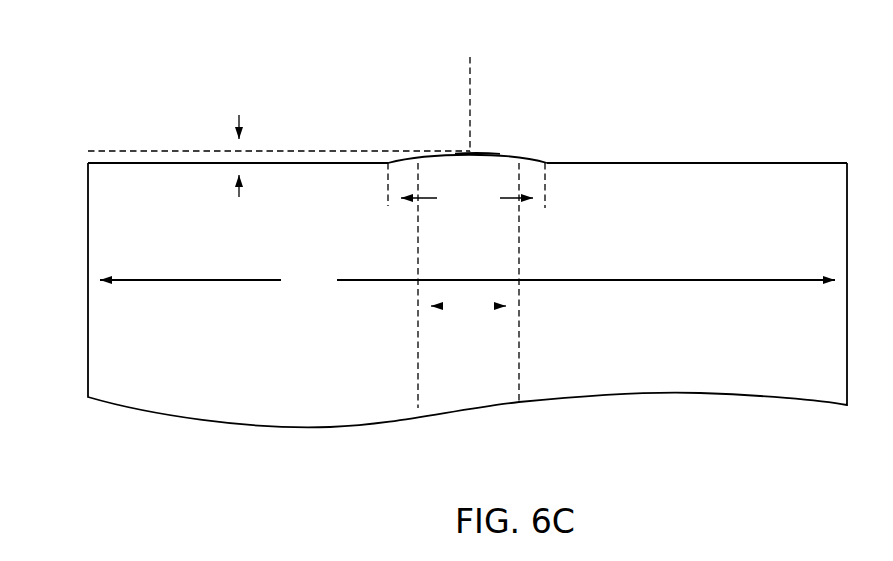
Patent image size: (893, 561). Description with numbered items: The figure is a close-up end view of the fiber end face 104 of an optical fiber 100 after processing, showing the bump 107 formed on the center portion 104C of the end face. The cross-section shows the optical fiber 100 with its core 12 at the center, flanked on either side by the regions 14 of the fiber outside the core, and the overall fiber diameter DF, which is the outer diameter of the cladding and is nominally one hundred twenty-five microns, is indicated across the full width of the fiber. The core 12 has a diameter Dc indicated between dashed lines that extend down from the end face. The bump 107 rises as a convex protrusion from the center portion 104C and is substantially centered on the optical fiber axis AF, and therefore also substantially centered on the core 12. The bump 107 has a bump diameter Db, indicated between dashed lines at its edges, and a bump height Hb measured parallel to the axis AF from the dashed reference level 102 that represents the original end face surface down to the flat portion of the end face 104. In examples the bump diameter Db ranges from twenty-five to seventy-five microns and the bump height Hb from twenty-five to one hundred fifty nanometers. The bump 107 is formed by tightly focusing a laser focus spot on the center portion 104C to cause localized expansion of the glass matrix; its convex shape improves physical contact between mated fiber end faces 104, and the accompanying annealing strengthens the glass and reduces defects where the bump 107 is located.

The optical fiber 100 is at (718, 84).
The reference plane (top surface level) 102 is at (158, 134).
The fiber end face 104 is at (755, 163).
The center portion of fiber end face 104C is at (548, 137).
The bump 107 is at (493, 151).
The core 12 is at (484, 361).
The side regions 14 is at (275, 353).
The optical fiber axis AF is at (470, 85).
The bump height Hb is at (238, 128).
The bump diameter Db is at (466, 187).
The core diameter Dc is at (468, 306).
The fiber diameter DF is at (467, 283).